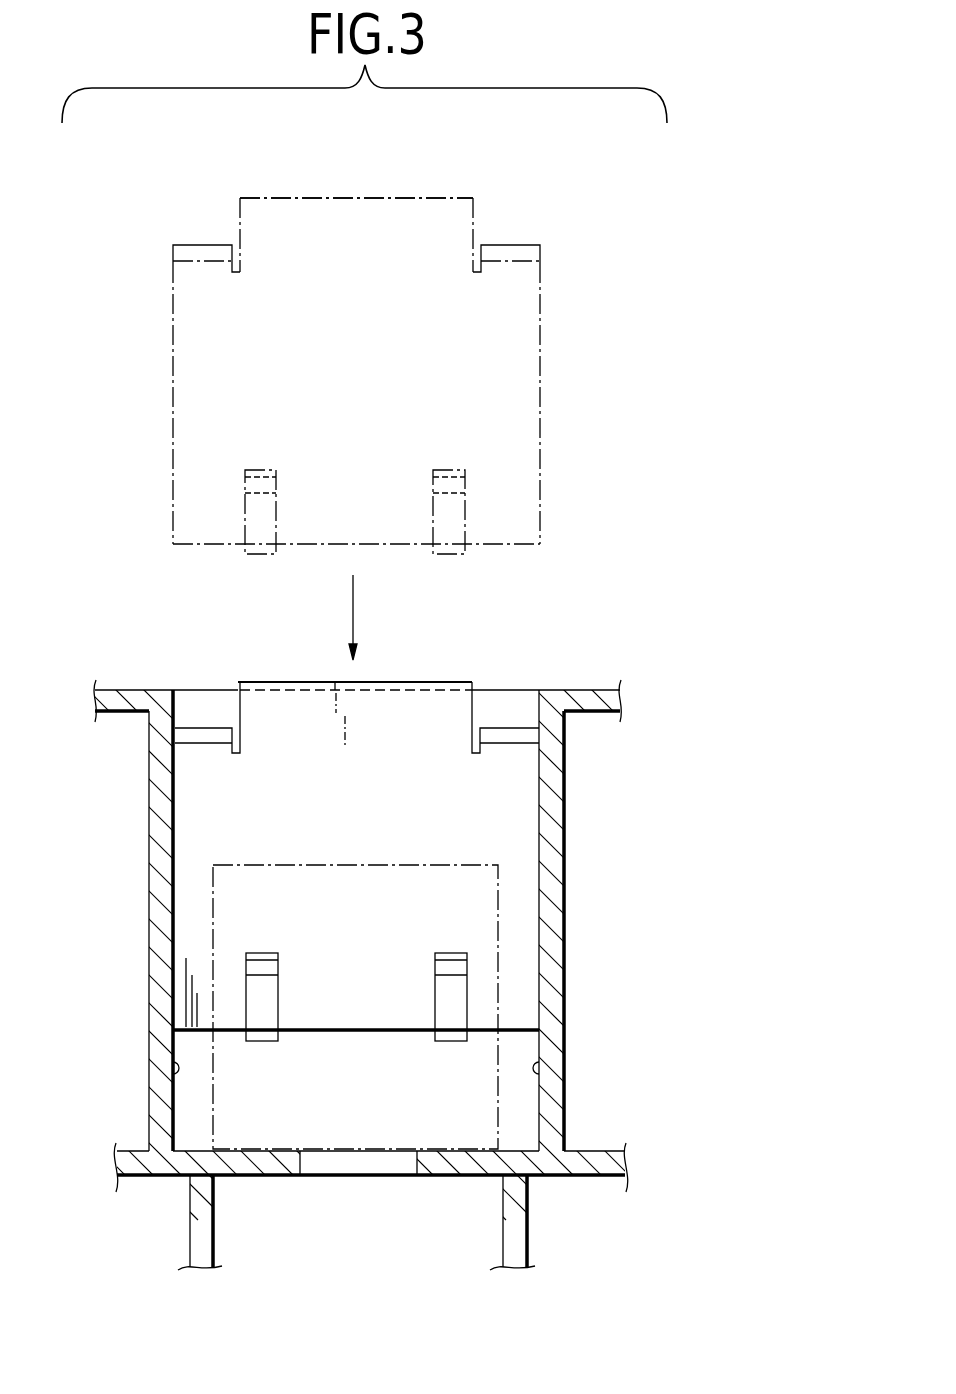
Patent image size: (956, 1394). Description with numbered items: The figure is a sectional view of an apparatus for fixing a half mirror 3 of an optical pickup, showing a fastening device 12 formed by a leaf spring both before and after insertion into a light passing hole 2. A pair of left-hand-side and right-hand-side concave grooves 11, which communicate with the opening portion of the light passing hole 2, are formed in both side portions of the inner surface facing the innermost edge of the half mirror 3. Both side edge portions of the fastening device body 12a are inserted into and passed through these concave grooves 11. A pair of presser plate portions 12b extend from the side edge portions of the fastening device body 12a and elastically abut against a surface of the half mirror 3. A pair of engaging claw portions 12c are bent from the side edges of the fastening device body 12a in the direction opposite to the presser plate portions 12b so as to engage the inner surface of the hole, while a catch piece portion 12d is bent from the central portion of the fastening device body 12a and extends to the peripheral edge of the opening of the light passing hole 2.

The light passing hole 2 is at (352, 1107).
The half mirror 3 is at (338, 878).
The concave grooves 11 is at (173, 1074).
The fastening device 12 is at (381, 579).
The fastening device body 12a is at (445, 392).
The presser plate portions 12b is at (445, 545).
The engaging claw portions 12c is at (195, 245).
The catch piece portion 12d is at (353, 197).